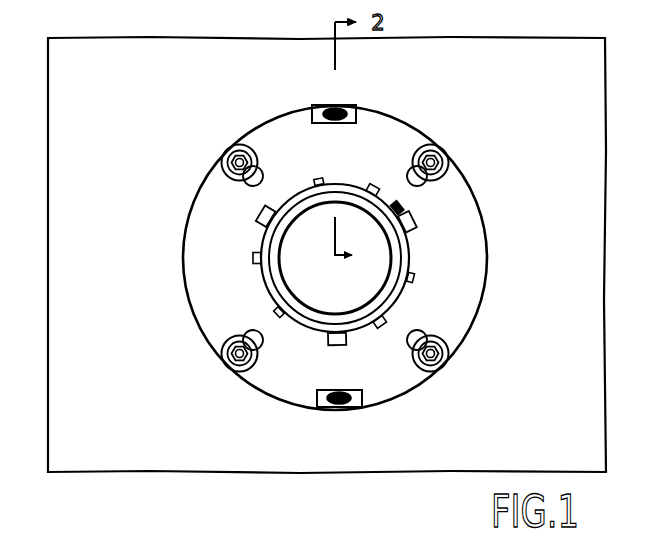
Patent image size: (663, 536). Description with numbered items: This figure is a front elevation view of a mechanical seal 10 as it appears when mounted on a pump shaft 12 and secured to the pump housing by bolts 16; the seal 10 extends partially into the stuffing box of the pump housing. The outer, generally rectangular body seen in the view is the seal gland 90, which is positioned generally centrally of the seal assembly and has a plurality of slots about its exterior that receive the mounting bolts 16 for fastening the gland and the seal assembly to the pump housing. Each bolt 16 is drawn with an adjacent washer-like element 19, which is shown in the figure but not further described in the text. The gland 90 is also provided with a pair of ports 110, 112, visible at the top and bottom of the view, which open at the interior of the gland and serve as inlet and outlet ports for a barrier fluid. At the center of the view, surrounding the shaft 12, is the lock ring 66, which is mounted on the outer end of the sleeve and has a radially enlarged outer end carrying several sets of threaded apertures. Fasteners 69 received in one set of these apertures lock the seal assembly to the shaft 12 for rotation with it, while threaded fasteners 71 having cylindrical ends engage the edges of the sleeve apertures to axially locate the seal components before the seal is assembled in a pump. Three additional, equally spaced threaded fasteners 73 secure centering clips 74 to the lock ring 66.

The mechanical seal 10 is at (292, 345).
The pump shaft 12 is at (351, 296).
The bolts 16 is at (447, 155).
The washer 19 is at (439, 151).
The lock ring 66 is at (411, 252).
The fasteners 69 is at (254, 260).
The threaded fasteners 71 is at (319, 179).
The threaded fasteners 73 is at (260, 214).
The centering clips 74 is at (402, 206).
The seal gland 90 is at (478, 311).
The port 110 is at (330, 104).
The port 112 is at (350, 408).